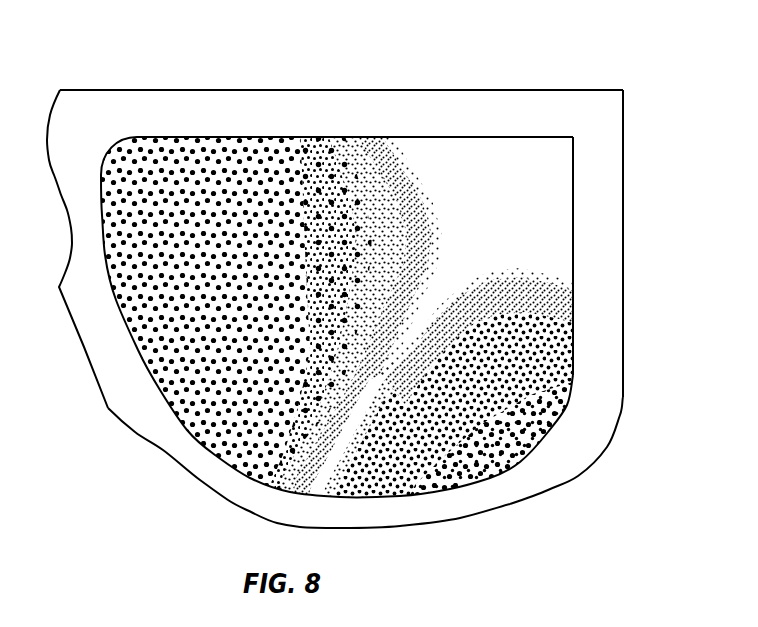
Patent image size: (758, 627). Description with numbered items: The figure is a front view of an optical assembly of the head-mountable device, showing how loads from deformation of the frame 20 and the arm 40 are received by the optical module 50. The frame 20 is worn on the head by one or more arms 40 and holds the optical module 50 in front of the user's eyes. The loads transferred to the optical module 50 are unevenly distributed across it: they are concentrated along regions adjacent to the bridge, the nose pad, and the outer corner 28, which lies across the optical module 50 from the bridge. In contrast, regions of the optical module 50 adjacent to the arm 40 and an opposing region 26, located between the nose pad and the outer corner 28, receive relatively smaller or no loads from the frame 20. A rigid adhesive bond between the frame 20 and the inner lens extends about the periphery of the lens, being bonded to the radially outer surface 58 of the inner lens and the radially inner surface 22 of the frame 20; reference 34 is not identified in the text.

The frame 20 is at (612, 167).
The inner surface of the frame 22 is at (573, 195).
The opposing region 26 is at (292, 522).
The outer corner 28 is at (580, 478).
The side wall 34 is at (108, 408).
The arm 40 is at (588, 90).
The optical module 50 is at (400, 165).
The outer surface of the inner lens 58 is at (573, 230).